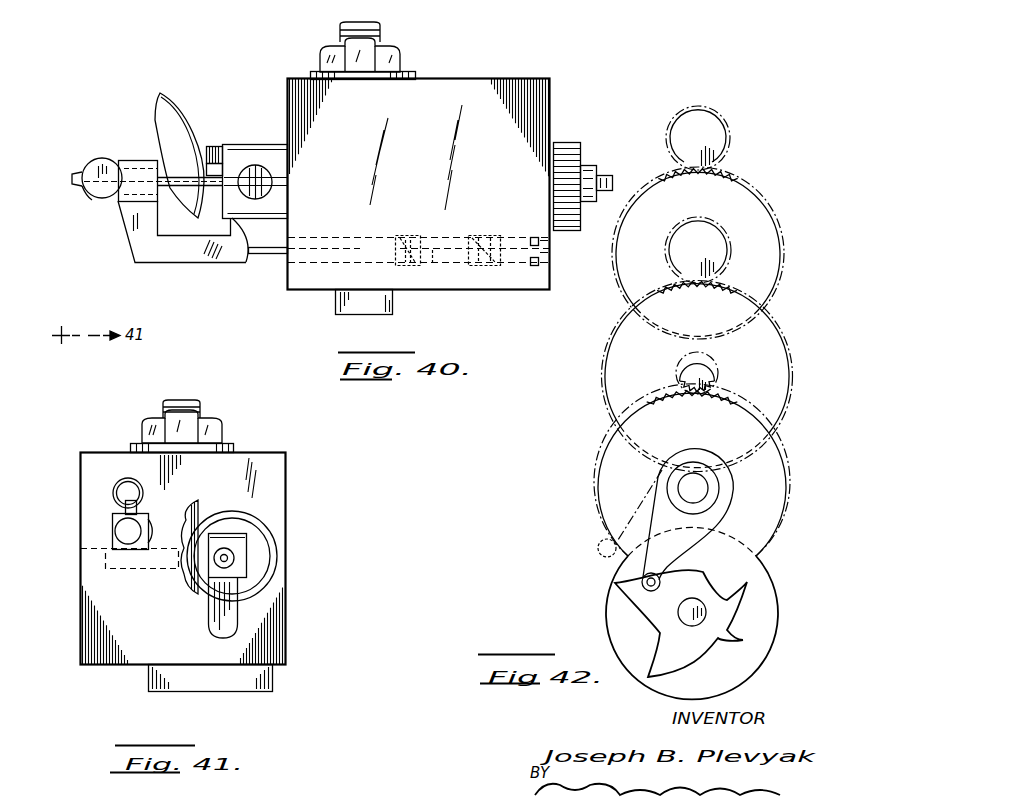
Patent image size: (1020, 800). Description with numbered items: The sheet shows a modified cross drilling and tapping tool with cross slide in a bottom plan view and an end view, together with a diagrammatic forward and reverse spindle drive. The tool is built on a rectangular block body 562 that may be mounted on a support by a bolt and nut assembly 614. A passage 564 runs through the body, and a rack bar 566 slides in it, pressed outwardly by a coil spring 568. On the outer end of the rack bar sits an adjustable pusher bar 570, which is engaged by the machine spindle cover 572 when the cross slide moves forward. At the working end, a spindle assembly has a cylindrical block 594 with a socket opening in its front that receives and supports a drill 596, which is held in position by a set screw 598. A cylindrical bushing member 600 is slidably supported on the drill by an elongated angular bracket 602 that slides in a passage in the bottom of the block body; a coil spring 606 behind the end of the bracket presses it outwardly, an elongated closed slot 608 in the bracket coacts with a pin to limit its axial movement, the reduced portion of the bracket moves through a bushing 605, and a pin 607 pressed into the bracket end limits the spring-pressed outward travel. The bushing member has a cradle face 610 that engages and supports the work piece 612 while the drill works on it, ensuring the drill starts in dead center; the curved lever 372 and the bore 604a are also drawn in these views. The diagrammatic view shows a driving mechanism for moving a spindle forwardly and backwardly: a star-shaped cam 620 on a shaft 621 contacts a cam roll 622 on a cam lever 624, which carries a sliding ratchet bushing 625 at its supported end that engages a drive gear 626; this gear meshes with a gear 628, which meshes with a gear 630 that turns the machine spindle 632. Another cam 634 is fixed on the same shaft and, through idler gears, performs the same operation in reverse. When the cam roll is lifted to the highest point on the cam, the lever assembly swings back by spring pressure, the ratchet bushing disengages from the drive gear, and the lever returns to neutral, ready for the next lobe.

In FIG. 40, the block body 562 is at (512, 92).
In FIG. 41, the block body 562 is at (276, 472).
In FIG. 40, the bolt and nut assembly 614 is at (310, 58).
In FIG. 41, the bolt and nut assembly 614 is at (238, 432).
In FIG. 40, the coil spring 568 is at (446, 66).
In FIG. 41, the coil spring 568 is at (113, 492).
In FIG. 40, the set screw 598 is at (249, 166).
In FIG. 40, the pusher bar 570 is at (212, 146).
In FIG. 40, the lever arm 372 is at (176, 112).
In FIG. 40, the bushing member 600 is at (140, 160).
In FIG. 41, the bushing member 600 is at (244, 578).
In FIG. 40, the work piece 612 is at (90, 165).
In FIG. 40, the cradle face 610 is at (108, 198).
In FIG. 40, the drill 596 is at (182, 196).
In FIG. 41, the drill 596 is at (232, 556).
In FIG. 40, the bracket 602 is at (158, 262).
In FIG. 41, the bracket 602 is at (232, 620).
In FIG. 40, the cylindrical block 594 is at (213, 266).
In FIG. 40, the closed slot 608 is at (270, 258).
In FIG. 40, the coil spring 606 is at (405, 232).
In FIG. 40, the bushing 605 is at (514, 268).
In FIG. 40, the bore 604a is at (434, 268).
In FIG. 40, the pin 607 is at (550, 266).
In FIG. 41, the passage 564 is at (112, 518).
In FIG. 41, the rack bar 566 is at (116, 536).
In FIG. 41, the machine spindle cover 572 is at (200, 510).
In FIG. 42, the machine spindle 632 is at (712, 136).
In FIG. 42, the gear 630 is at (745, 206).
In FIG. 42, the gear 628 is at (620, 358).
In FIG. 42, the drive gear 626 is at (615, 430).
In FIG. 42, the sliding ratchet bushing 625 is at (678, 482).
In FIG. 42, the cam lever 624 is at (662, 508).
In FIG. 42, the cam roll 622 is at (642, 578).
In FIG. 42, the star-shaped cam 620 is at (632, 602).
In FIG. 42, the cam 634 is at (606, 629).
In FIG. 42, the shaft 621 is at (694, 610).